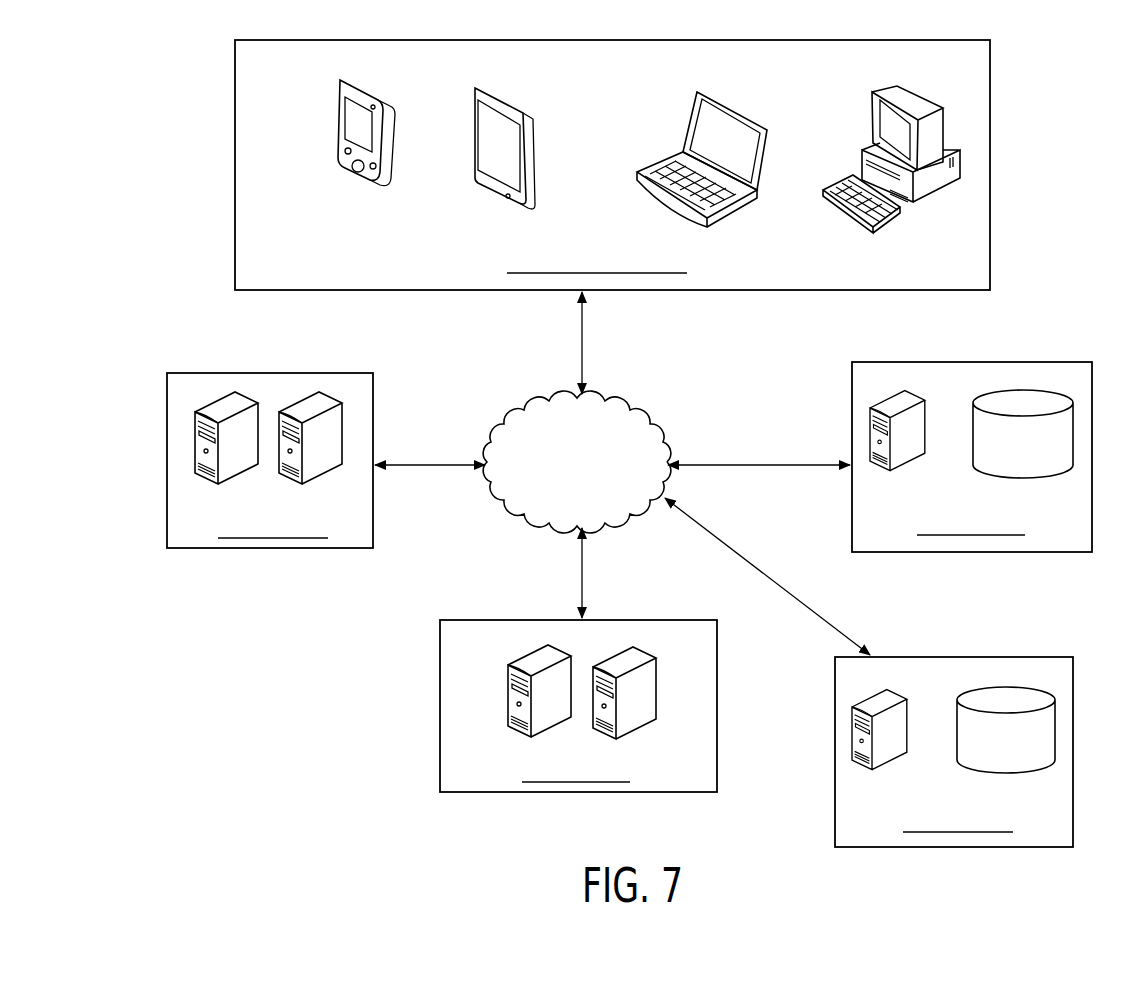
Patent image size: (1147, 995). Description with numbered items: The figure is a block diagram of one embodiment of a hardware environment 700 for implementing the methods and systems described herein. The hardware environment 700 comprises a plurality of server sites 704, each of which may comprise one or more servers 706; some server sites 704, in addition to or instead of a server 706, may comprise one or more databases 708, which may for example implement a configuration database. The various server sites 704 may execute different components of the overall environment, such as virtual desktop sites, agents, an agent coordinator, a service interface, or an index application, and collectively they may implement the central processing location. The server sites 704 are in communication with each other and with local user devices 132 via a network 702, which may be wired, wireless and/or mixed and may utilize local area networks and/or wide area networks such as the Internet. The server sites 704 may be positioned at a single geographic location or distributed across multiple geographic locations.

The hardware environment 700 is at (1018, 76).
The local user devices 132 is at (340, 103).
The network 702 is at (611, 395).
The server sites 704 is at (325, 373).
The servers 706 is at (195, 438).
The databases 708 is at (1075, 430).